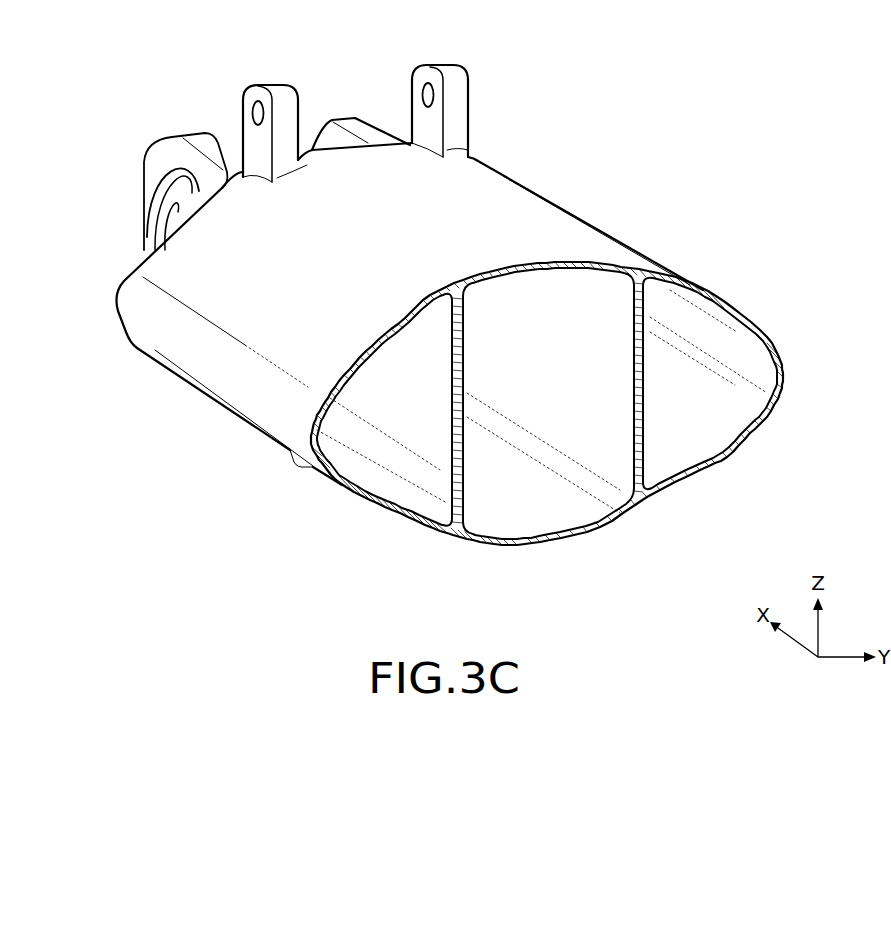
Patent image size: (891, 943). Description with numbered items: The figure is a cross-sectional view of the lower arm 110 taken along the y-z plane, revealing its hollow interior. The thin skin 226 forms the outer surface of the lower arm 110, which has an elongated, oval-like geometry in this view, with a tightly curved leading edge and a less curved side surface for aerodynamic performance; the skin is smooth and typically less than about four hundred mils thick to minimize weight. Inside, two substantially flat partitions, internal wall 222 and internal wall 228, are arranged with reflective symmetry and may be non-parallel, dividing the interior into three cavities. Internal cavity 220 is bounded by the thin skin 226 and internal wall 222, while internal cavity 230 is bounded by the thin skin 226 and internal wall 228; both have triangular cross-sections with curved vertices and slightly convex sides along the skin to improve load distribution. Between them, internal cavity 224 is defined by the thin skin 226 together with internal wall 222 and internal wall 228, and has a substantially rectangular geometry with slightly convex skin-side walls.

The lower arm 110 is at (678, 108).
The internal cavity 220 is at (730, 418).
The internal wall 222 is at (641, 368).
The internal cavity 224 is at (577, 420).
The thin skin 226 is at (523, 200).
The internal wall 228 is at (463, 327).
The internal cavity 230 is at (393, 443).